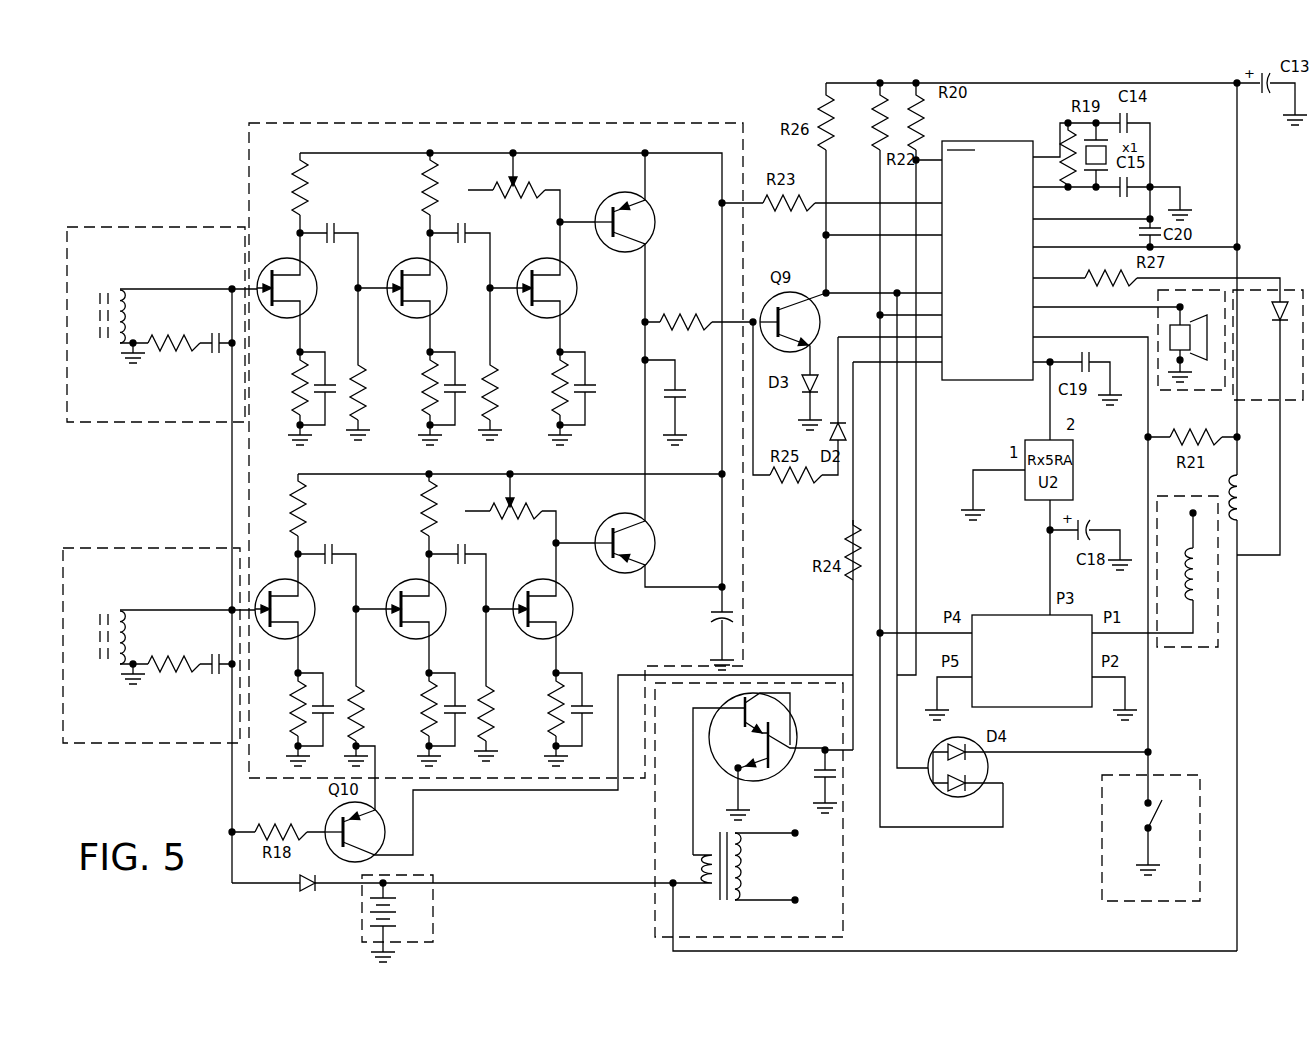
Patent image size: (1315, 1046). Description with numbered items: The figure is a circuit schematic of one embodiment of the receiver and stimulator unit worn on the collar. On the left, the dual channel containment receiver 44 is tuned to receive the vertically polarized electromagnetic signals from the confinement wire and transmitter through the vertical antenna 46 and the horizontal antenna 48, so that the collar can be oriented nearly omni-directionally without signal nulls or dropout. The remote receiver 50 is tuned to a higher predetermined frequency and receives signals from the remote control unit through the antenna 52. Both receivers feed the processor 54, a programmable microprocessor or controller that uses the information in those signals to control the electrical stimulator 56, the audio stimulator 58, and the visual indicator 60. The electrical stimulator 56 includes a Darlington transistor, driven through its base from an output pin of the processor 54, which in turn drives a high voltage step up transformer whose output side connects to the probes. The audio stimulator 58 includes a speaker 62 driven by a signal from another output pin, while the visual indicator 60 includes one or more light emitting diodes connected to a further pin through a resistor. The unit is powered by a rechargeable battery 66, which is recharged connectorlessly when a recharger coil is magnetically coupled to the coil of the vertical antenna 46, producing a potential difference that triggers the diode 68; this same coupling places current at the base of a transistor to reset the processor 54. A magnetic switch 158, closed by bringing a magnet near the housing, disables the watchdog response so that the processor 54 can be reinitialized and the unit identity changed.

The dual channel containment receiver 44 is at (249, 149).
The vertical antenna 46 is at (179, 548).
The horizontal antenna 48 is at (170, 226).
The remote receiver 50 is at (1046, 707).
The antenna 52 is at (1197, 648).
The processor 54 is at (988, 170).
The electrical stimulator 56 is at (845, 895).
The audio stimulator 58 is at (1232, 284).
The visual indicator 60 is at (1258, 406).
The speaker 62 is at (1170, 332).
The rechargeable battery 66 is at (437, 917).
The diode 68 is at (300, 890).
The magnetic switch 158 is at (1102, 881).